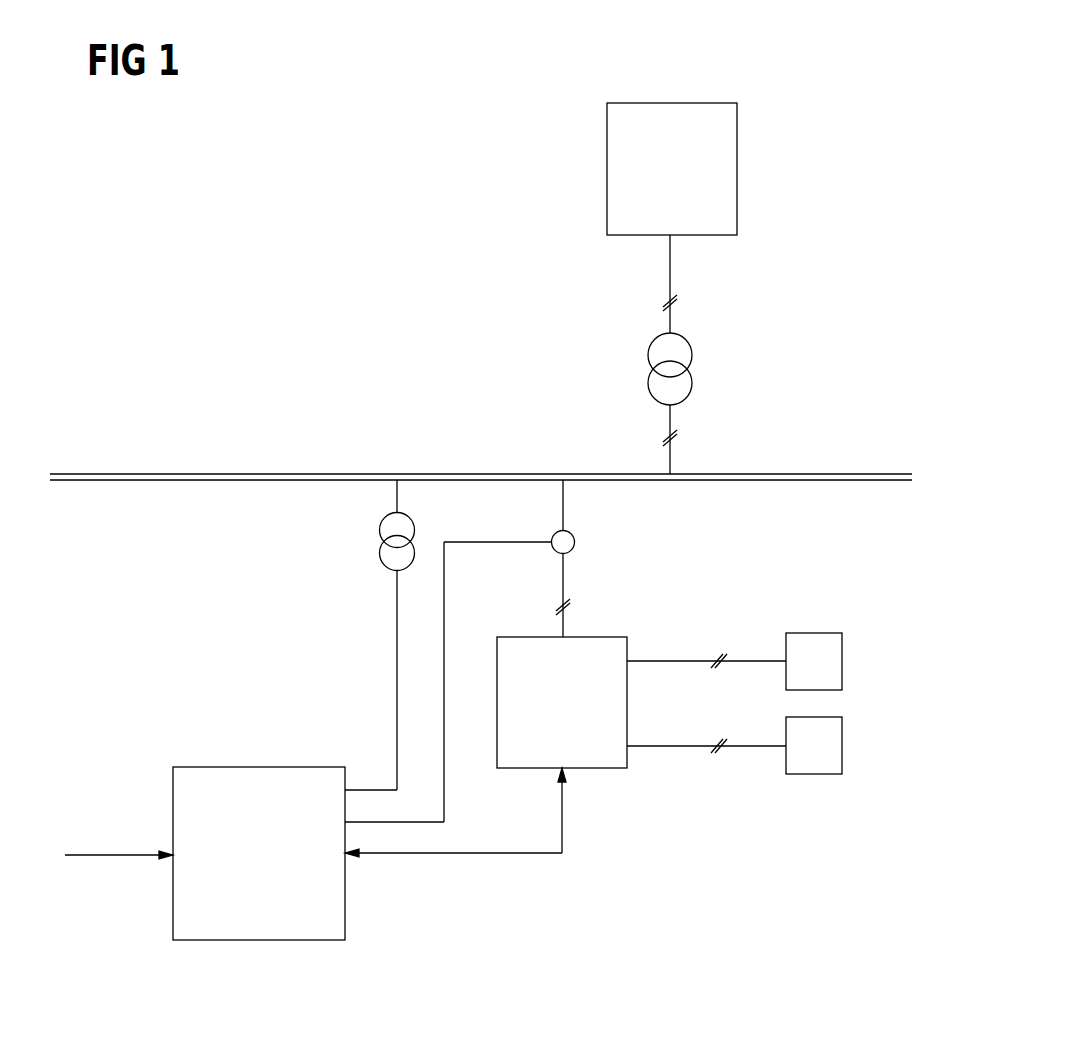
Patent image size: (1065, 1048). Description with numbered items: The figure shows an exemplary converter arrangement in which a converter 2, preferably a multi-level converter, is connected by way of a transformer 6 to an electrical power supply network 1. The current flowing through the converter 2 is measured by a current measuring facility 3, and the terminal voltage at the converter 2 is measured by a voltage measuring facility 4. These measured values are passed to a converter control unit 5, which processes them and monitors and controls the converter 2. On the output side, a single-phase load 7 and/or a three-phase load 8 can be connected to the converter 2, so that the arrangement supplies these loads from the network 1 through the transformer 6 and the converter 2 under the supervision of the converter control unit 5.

The electrical power supply network 1 is at (607, 160).
The converter 2 is at (600, 770).
The current measuring facility 3 is at (576, 542).
The voltage measuring facility 4 is at (378, 533).
The converter control unit 5 is at (262, 942).
The transformer 6 is at (648, 357).
The single-phase load 7 is at (843, 661).
The three-phase load 8 is at (843, 746).